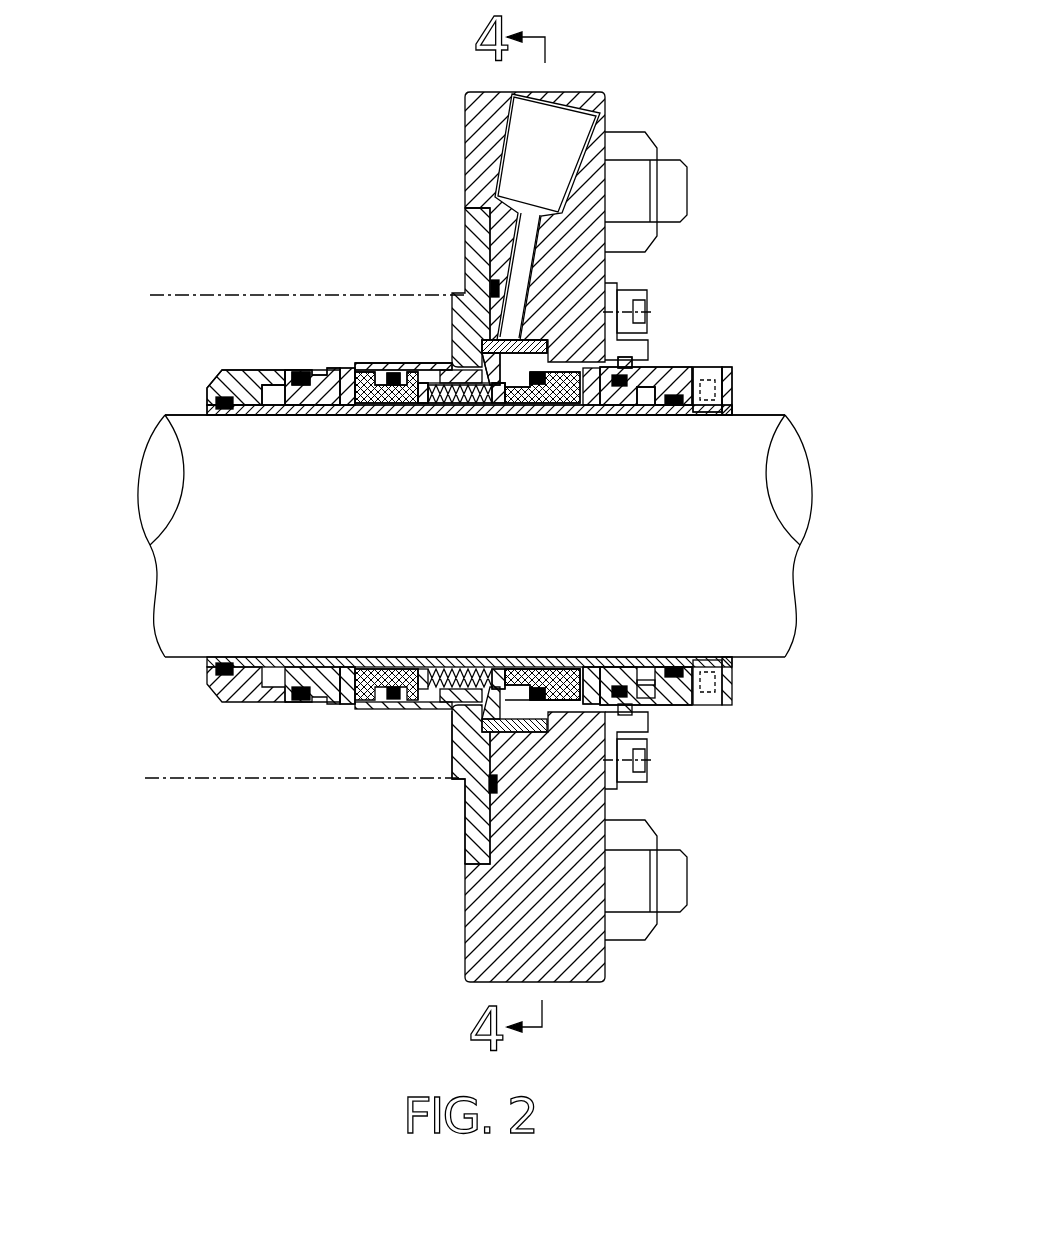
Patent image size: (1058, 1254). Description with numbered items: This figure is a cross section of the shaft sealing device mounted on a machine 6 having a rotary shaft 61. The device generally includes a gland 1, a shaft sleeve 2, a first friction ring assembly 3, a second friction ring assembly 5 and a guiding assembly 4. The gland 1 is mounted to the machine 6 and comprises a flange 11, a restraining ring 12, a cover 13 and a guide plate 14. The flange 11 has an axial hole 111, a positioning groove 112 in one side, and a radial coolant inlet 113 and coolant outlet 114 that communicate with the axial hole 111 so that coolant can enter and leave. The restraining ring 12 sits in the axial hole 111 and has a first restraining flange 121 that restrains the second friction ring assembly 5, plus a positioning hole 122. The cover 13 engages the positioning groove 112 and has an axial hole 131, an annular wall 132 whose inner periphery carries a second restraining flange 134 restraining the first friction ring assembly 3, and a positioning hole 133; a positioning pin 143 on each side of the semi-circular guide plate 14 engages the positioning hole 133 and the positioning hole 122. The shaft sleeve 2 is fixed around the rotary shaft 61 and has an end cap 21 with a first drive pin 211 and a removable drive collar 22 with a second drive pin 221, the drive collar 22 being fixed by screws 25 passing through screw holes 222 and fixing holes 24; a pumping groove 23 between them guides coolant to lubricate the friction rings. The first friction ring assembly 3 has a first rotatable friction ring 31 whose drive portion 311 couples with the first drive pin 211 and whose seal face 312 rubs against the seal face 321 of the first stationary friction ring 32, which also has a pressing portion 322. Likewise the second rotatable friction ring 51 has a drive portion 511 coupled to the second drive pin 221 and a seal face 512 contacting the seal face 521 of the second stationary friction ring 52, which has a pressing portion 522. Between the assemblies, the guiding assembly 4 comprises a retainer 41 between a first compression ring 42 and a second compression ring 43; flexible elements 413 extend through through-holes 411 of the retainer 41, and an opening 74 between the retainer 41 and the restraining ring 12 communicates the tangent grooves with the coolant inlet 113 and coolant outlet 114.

The gland 1 is at (437, 945).
The flange 11 is at (589, 185).
The axial hole 111 is at (442, 712).
The positioning groove 112 is at (470, 868).
The coolant inlet 113 is at (547, 217).
The coolant outlet 114 is at (570, 120).
The restraining ring 12 is at (570, 412).
The first restraining flange 121 is at (528, 410).
The positioning hole 122 is at (560, 338).
The cover 13 is at (455, 838).
The axial hole 131 is at (365, 710).
The annular wall 132 is at (372, 712).
The positioning hole 133 is at (462, 238).
The second restraining flange 134 is at (400, 712).
The guide plate 14 is at (548, 300).
The positioning pin 143 is at (514, 346).
The shaft sleeve 2 is at (207, 395).
The end cap 21 is at (238, 367).
The first drive pin 211 is at (262, 367).
The drive collar 22 is at (735, 370).
The second drive pin 221 is at (648, 702).
The screw hole 222 is at (738, 398).
The pumping groove 23 is at (385, 712).
The fixing hole 24 is at (738, 416).
The screw 25 is at (708, 372).
The first friction ring assembly 3 is at (338, 100).
The first rotatable friction ring 31 is at (318, 367).
The drive portion 311 is at (272, 367).
The seal face 312 is at (333, 367).
The first stationary friction ring 32 is at (375, 367).
The seal face 321 is at (347, 370).
The pressing portion 322 is at (416, 372).
The guiding assembly 4 is at (475, 527).
The retainer 41 is at (468, 406).
The through-hole 411 is at (485, 408).
The flexible element 413 is at (422, 415).
The first compression ring 42 is at (415, 406).
The second compression ring 43 is at (503, 406).
The second friction ring assembly 5 is at (533, 550).
The second rotatable friction ring 51 is at (622, 692).
The drive portion 511 is at (640, 695).
The seal face 512 is at (588, 690).
The second stationary friction ring 52 is at (526, 690).
The seal face 521 is at (575, 690).
The pressing portion 522 is at (503, 685).
The machine 6 is at (156, 295).
The rotary shaft 61 is at (205, 492).
The opening 74 is at (500, 390).